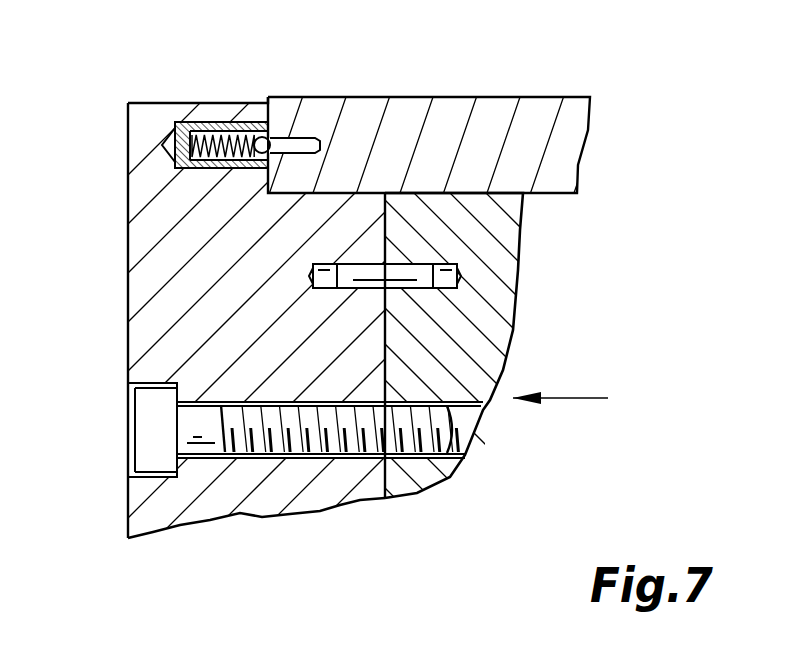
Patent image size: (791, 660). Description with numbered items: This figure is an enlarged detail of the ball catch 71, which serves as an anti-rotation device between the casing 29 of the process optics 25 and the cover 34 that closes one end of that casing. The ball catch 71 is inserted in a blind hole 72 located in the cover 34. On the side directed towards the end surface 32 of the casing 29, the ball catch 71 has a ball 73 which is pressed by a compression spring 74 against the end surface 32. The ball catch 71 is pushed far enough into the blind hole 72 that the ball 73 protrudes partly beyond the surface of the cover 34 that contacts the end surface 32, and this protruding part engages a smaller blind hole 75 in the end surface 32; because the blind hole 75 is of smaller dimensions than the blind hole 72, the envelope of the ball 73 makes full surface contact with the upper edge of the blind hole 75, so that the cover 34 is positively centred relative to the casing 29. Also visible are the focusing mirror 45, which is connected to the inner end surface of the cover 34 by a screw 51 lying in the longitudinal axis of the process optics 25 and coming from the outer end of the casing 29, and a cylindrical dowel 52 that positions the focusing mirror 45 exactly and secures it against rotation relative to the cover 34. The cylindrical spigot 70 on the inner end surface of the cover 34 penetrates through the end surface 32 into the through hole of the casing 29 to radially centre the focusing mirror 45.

The process optics 25 is at (577, 399).
The casing 29 is at (487, 118).
The end surface 32 is at (267, 100).
The cover 34 is at (203, 490).
The focusing mirror 45 is at (467, 257).
The screw 51 is at (315, 453).
The cylindrical dowel 52 is at (390, 277).
The cylindrical spigot 70 is at (342, 215).
The ball catch 71 is at (200, 177).
The blind hole 72 is at (297, 137).
The ball 73 is at (272, 133).
The compression spring 74 is at (205, 125).
The blind hole 75 is at (167, 157).